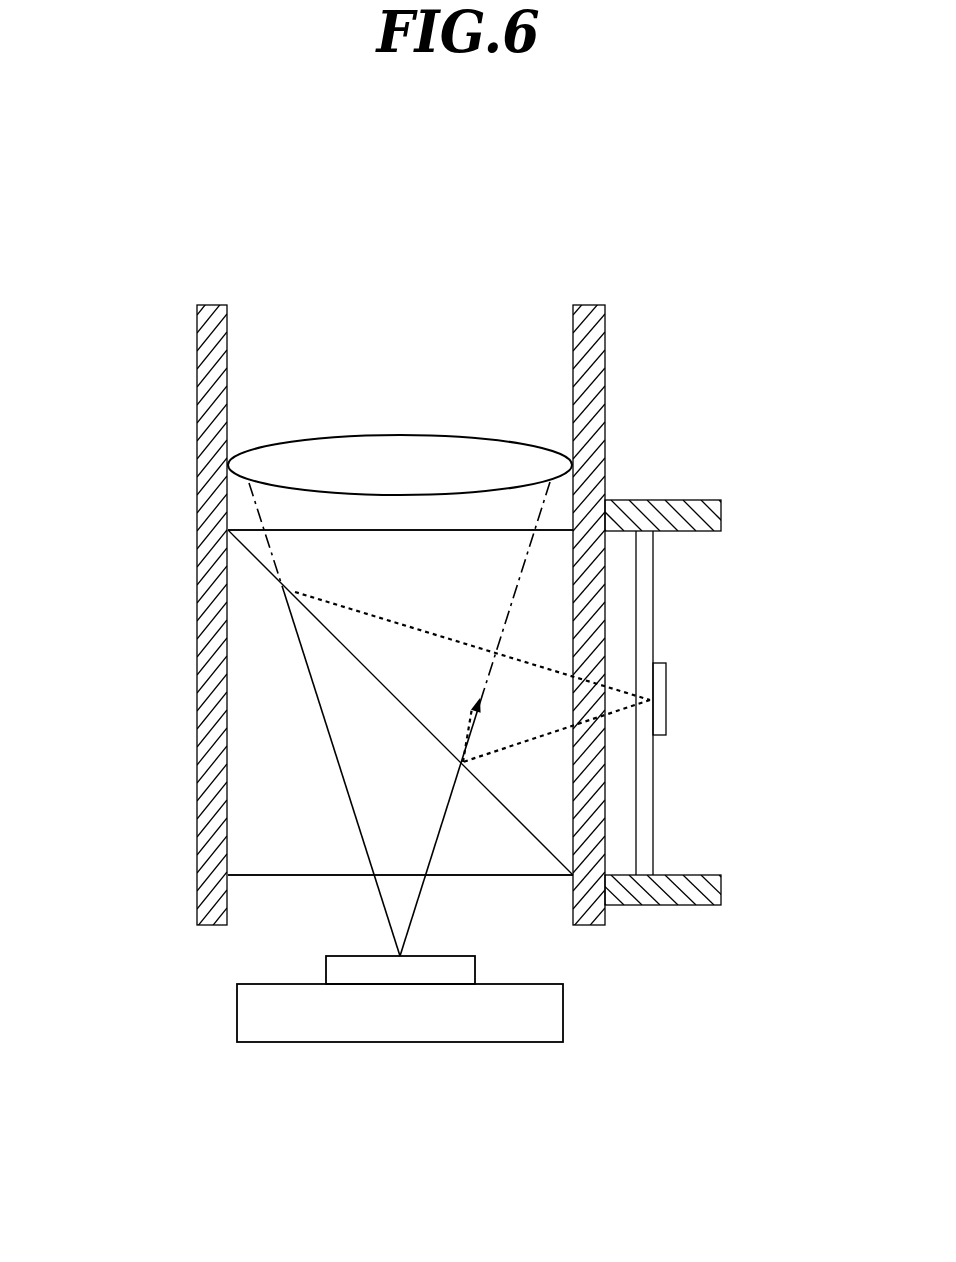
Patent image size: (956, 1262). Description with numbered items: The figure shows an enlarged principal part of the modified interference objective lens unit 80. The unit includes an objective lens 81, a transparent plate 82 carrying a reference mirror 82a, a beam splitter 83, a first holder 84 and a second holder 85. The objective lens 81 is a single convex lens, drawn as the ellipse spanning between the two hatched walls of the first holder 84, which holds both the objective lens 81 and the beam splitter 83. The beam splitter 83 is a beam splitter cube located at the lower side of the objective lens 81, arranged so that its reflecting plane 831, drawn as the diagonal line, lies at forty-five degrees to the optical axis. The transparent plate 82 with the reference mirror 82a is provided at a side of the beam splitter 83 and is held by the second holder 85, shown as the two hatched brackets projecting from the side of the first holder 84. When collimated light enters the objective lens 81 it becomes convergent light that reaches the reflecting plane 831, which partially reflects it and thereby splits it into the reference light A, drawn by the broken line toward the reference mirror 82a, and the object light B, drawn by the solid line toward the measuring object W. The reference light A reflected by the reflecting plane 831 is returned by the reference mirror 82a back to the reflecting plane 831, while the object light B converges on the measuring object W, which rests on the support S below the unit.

The interference objective lens unit 80 is at (479, 262).
The objective lens 81 is at (545, 449).
The transparent plate 82 is at (653, 615).
The reference mirror 82a is at (666, 698).
The beam splitter 83 is at (225, 587).
The reflecting plane 831 is at (348, 645).
The first holder 84 is at (207, 335).
The second holder 85 is at (722, 513).
The reference light A is at (410, 627).
The object light B is at (330, 733).
The measuring object W is at (448, 973).
The stage S is at (535, 1017).